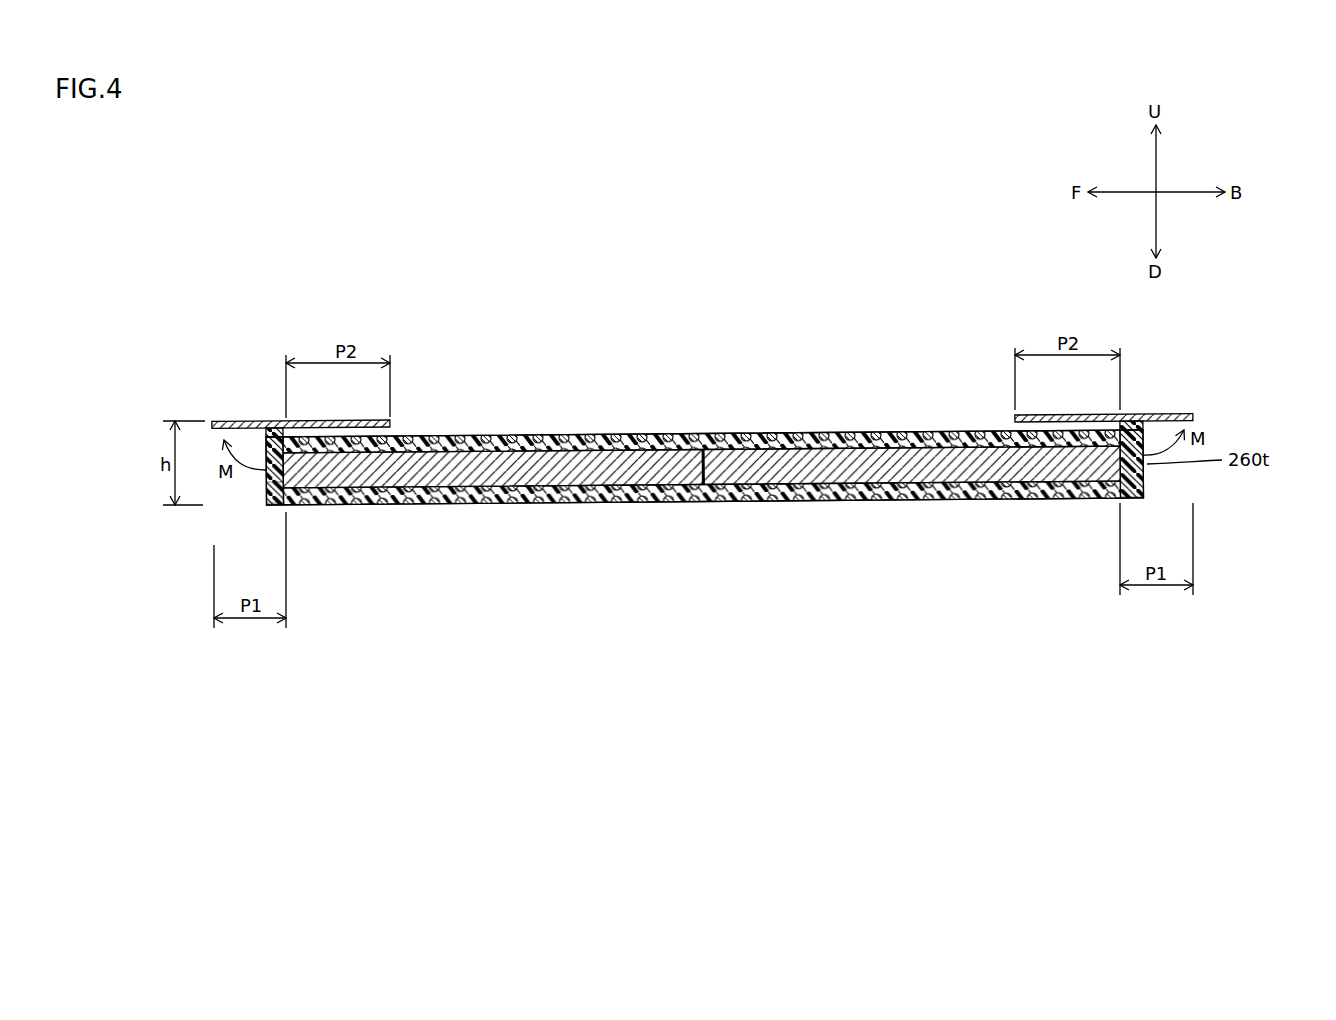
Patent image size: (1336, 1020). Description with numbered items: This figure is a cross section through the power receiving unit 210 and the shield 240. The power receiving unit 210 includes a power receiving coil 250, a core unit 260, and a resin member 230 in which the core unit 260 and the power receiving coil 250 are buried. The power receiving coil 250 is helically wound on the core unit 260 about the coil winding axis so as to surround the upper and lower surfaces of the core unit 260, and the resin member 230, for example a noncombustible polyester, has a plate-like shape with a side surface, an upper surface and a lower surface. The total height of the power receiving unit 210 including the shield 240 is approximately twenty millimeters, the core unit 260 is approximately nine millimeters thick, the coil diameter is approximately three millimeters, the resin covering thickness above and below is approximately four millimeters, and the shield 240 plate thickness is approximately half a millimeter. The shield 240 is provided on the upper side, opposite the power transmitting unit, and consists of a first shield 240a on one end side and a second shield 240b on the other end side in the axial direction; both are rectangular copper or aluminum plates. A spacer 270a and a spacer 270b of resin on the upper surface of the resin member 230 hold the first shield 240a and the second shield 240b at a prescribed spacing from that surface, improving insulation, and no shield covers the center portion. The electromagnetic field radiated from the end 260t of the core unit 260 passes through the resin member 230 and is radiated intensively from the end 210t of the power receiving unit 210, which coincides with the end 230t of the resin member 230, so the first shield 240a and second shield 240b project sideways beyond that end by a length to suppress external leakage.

The power receiving unit 210 is at (702, 532).
The resin member 230 is at (847, 496).
The power receiving coil 250 is at (985, 500).
The core unit 260 is at (870, 470).
The shield 240 is at (998, 394).
The first shield 240a is at (270, 428).
The second shield 240b is at (1170, 417).
The spacer 270a is at (266, 434).
The spacer 270b is at (1127, 428).
The end of core unit 260t is at (266, 481).
The end of power receiving unit 210t is at (266, 502).
The end of resin member 230t is at (1145, 487).